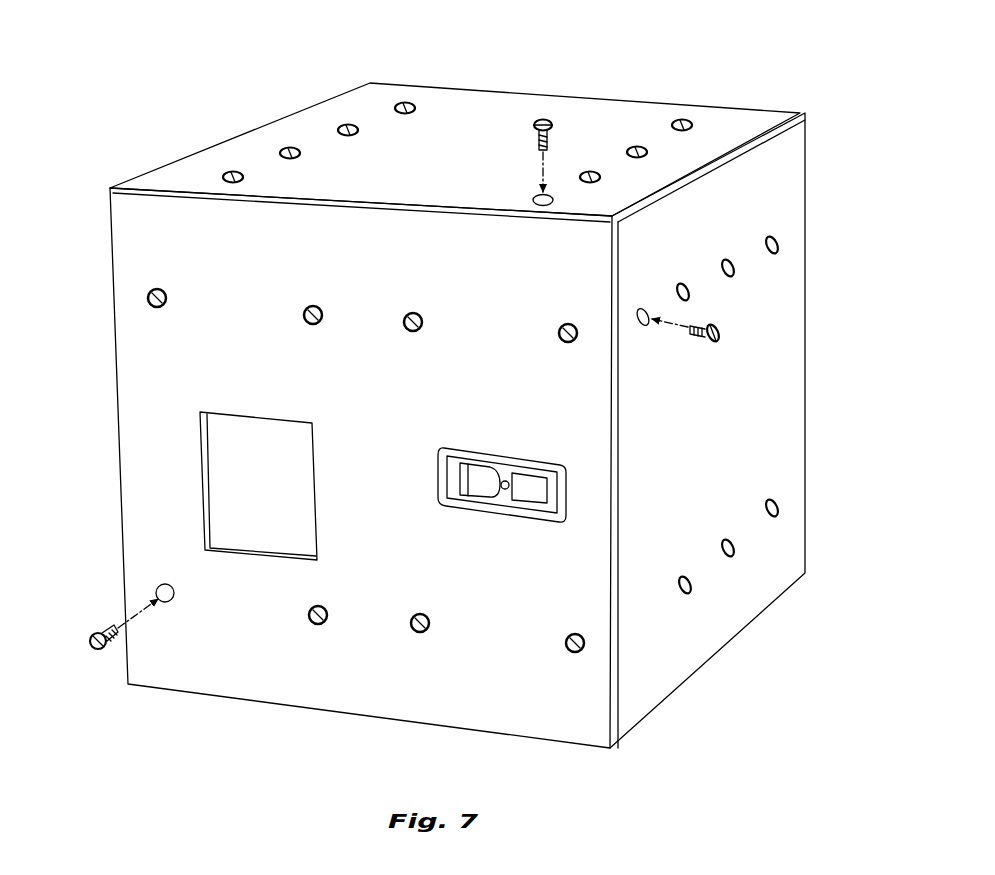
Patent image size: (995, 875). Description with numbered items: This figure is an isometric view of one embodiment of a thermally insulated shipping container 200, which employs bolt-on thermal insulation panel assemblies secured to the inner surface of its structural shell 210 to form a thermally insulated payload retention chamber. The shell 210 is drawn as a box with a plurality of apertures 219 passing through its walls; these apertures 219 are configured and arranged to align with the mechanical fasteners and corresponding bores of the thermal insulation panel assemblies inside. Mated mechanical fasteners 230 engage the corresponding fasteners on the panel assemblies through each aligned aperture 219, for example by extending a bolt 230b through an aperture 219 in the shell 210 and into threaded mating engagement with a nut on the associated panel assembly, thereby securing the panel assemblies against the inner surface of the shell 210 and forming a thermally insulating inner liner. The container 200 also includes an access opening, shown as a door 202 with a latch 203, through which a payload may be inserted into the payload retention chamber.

The thermally insulated shipping container 200 is at (230, 83).
The door 202 is at (397, 394).
The latch 203 is at (485, 492).
The structural shell 210 is at (500, 118).
The aperture 219 is at (540, 175).
The mated mechanical fastener 230 is at (415, 377).
The bolt 230b is at (403, 102).